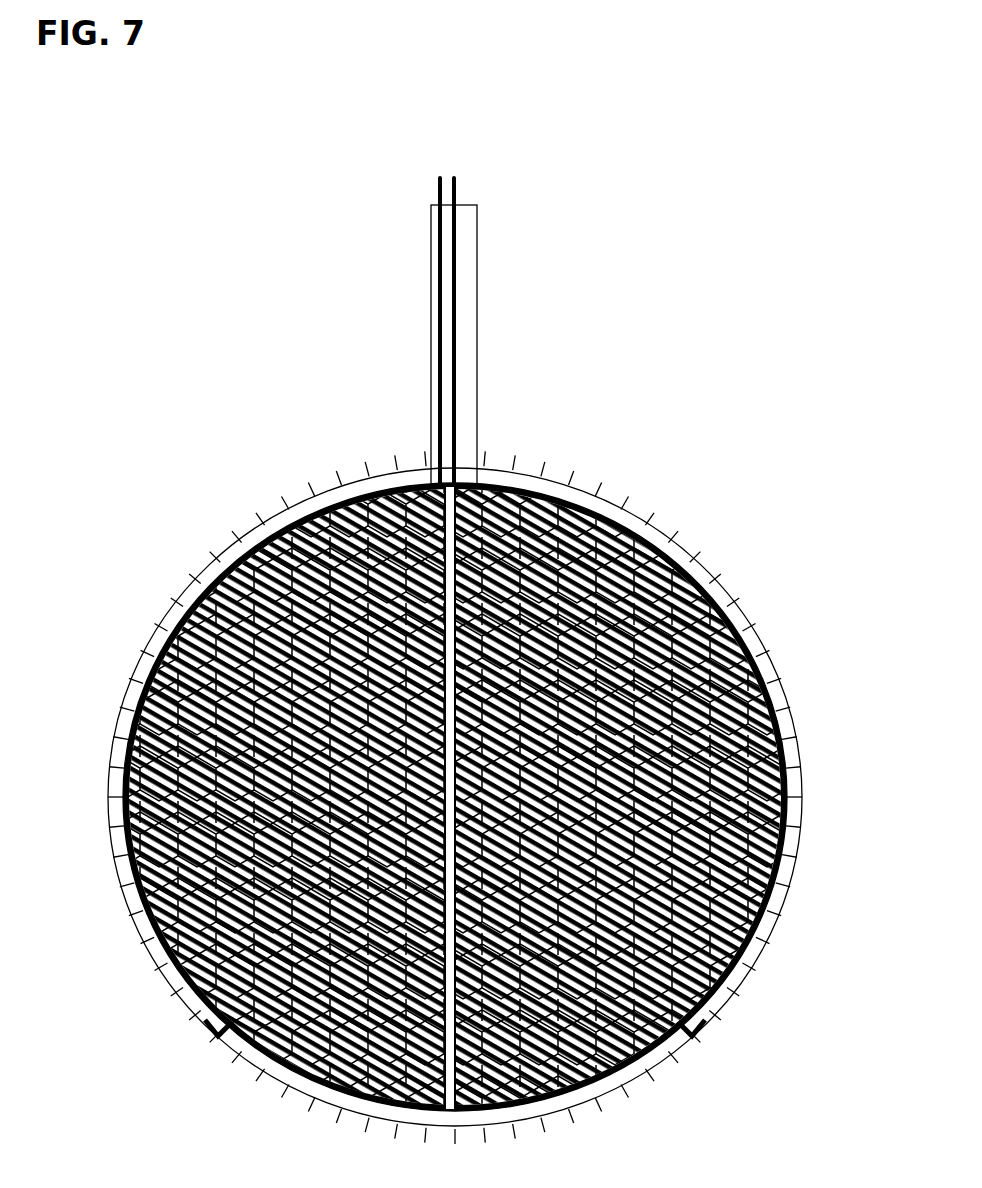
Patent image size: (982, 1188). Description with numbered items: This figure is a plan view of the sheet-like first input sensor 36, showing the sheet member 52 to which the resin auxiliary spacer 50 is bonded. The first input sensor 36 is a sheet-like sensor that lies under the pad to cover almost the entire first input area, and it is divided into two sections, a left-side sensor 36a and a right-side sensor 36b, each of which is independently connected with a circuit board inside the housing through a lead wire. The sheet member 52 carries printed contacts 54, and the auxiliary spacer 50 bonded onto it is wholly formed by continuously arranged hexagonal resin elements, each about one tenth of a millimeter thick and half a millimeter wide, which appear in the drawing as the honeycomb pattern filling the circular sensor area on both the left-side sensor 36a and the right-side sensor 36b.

The first input sensor 36 is at (583, 384).
The left-side sensor 36a is at (279, 484).
The right-side sensor 36b is at (625, 482).
The auxiliary spacer 50 is at (700, 572).
The sheet member 52 is at (770, 713).
The printed contacts 54 is at (748, 643).